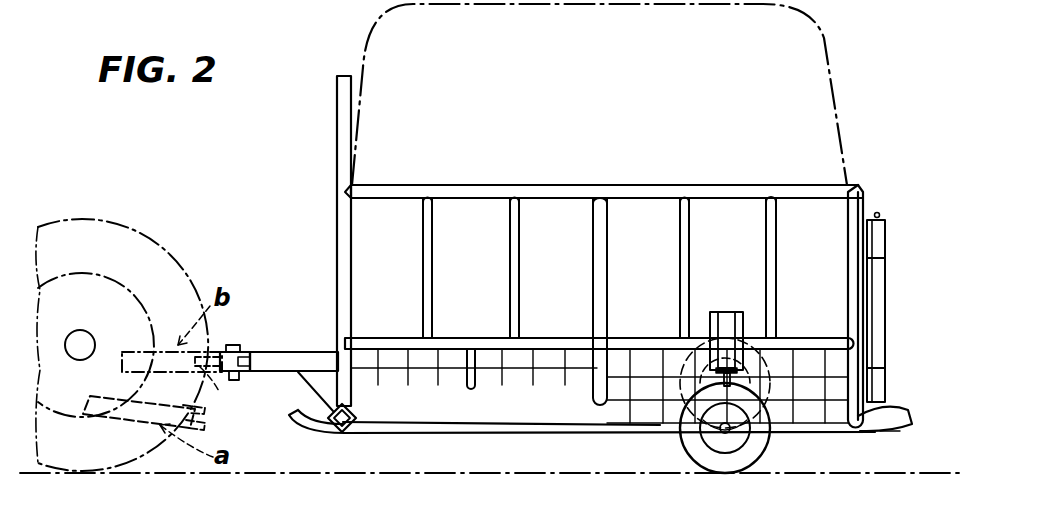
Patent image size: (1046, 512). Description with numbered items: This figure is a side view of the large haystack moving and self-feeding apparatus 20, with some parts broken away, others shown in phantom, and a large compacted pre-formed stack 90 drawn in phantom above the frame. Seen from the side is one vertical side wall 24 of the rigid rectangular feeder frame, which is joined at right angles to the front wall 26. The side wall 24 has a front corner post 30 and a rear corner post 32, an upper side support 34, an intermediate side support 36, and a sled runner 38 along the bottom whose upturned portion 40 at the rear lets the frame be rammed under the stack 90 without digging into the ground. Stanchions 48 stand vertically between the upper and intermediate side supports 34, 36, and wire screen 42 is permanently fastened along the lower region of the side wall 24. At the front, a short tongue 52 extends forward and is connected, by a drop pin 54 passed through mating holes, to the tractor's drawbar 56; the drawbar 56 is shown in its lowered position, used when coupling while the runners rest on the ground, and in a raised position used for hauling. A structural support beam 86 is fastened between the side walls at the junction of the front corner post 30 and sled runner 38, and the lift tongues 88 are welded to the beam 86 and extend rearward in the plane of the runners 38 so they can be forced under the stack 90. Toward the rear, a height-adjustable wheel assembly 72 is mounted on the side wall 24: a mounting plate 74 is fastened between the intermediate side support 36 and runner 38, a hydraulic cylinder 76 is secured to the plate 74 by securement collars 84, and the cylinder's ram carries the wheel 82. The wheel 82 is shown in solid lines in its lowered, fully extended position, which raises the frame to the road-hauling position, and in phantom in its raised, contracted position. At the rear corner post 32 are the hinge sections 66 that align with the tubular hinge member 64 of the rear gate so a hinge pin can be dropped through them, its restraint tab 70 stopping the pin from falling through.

The haystack moving and self-feeding apparatus 20 is at (300, 262).
The vertical side wall 24 is at (641, 184).
The front wall 26 is at (334, 223).
The front corner post 30 is at (337, 118).
The rear corner post 32 is at (863, 413).
The upper side support 34 is at (546, 188).
The intermediate side support 36 is at (453, 346).
The sled runner 38 is at (657, 428).
The upturned portion 40 is at (890, 432).
The wire screen 42 is at (548, 375).
The stanchion 48 is at (508, 241).
The tongue 52 is at (296, 355).
The drop pin 54 is at (241, 345).
The tractor drawbar 56 is at (209, 376).
The tubular hinge member 64 is at (883, 316).
The hinge section 66 is at (881, 247).
The restraint tab 70 is at (879, 213).
The height-adjustable wheel assembly 72 is at (790, 446).
The mounting plate 74 is at (737, 312).
The hydraulic cylinder 76 is at (722, 330).
The wheel 82 is at (705, 452).
The cylinder barrel 84 is at (716, 314).
The structural support beam 86 is at (355, 416).
The lift tongue 88 is at (505, 432).
The stack 90 is at (857, 54).